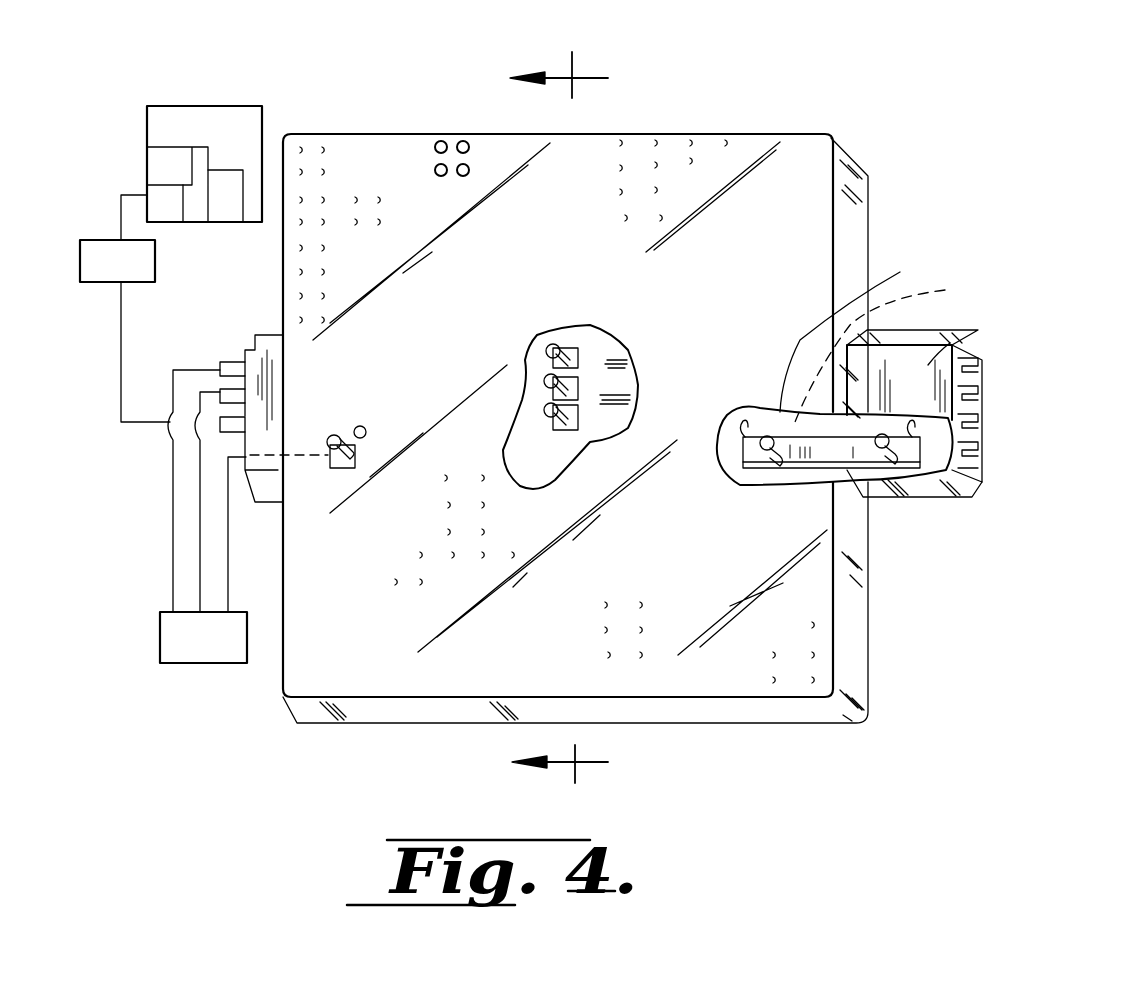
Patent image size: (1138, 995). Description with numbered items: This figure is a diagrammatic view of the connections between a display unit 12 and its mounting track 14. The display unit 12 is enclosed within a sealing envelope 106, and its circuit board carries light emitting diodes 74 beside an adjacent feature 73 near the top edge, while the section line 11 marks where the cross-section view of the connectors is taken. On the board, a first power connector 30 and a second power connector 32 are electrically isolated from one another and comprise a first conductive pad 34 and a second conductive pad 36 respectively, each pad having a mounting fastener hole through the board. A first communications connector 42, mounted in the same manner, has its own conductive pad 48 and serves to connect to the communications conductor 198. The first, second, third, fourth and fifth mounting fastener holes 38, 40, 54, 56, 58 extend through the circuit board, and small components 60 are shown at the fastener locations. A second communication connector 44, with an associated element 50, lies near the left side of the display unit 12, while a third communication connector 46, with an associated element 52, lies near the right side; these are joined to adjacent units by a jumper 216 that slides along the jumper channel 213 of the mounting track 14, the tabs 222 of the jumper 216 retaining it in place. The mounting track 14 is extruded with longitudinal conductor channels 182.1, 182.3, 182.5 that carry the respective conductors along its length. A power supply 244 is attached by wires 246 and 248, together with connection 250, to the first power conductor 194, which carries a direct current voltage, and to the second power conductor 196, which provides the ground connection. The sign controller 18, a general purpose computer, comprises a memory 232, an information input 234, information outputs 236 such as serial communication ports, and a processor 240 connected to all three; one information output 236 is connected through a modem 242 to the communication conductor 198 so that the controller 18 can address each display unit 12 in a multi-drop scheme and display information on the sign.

The display unit 12 is at (880, 158).
The sealing envelope 106 is at (885, 222).
The section line 11- 11 is at (569, 422).
The mounting hole 73 is at (465, 141).
The light emitting diodes 74 is at (440, 141).
The sign controller 18 is at (173, 149).
The information input 234 is at (162, 158).
The information output 236 is at (165, 195).
The processor 240 is at (226, 175).
The memory 232 is at (195, 205).
The modem 242 is at (125, 308).
The first power conductor 194 is at (228, 360).
The second power conductor 196 is at (228, 392).
The communication conductor 198 is at (230, 423).
The fourth mounting fastener hole 56 is at (328, 468).
The wire 248 is at (175, 510).
The wire 246 is at (173, 578).
The wire 250 is at (200, 590).
The power supply 244 is at (195, 663).
The second communication connector 44 is at (330, 470).
The conductor 50 is at (270, 613).
The third mounting fastener hole 54 is at (570, 407).
The first power connector 30 is at (565, 340).
The first conductive pad 34 is at (603, 323).
The second power connector 32 is at (615, 382).
The second conductive pad 36 is at (637, 370).
The first communications connector 42 is at (628, 402).
The conductive pad 48 is at (629, 410).
The first mounting fastener hole 38 is at (545, 345).
The second mounting fastener hole 40 is at (553, 388).
The fastener 60 is at (365, 426).
The fifth mounting fastener hole 58 is at (865, 331).
The third communication connector 46 is at (907, 351).
The conductor 52 is at (907, 351).
The jumper 216 is at (840, 450).
The tabs 222 is at (920, 475).
The mounting track 14 is at (965, 403).
The longitudinal conductor channel 182.1 is at (975, 370).
The longitudinal conductor channel 182.3 is at (975, 400).
The longitudinal conductor channel 182.5 is at (975, 430).
The longitudinal jumper chamber 213 is at (975, 460).